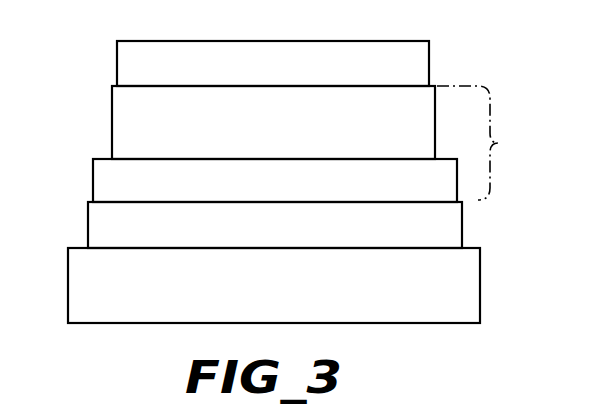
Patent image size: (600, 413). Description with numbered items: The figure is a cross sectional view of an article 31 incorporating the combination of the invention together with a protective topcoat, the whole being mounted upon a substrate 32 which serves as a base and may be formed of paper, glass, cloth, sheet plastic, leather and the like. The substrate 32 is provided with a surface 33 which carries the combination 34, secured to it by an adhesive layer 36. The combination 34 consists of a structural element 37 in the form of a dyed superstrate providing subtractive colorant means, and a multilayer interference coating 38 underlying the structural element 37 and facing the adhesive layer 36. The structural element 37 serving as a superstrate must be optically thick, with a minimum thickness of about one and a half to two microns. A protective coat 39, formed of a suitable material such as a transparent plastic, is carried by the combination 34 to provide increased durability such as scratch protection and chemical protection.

The article 31 is at (97, 33).
The substrate 32 is at (467, 288).
The surface 33 is at (468, 247).
The combination 34 is at (498, 143).
The adhesive layer 36 is at (88, 228).
The structural element 37 is at (112, 110).
The multilayer interference coating 38 is at (93, 182).
The protective coat 39 is at (117, 65).